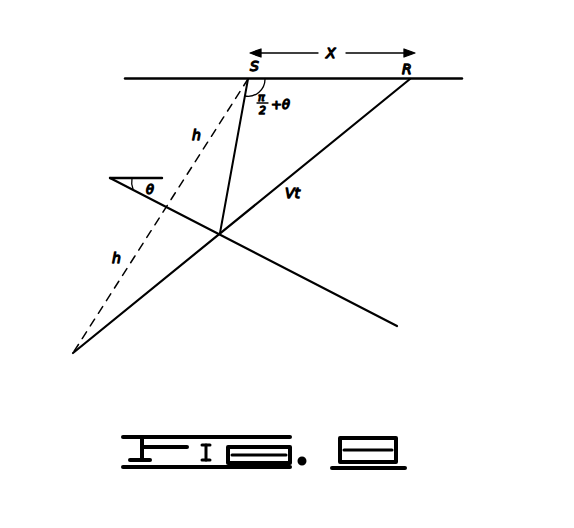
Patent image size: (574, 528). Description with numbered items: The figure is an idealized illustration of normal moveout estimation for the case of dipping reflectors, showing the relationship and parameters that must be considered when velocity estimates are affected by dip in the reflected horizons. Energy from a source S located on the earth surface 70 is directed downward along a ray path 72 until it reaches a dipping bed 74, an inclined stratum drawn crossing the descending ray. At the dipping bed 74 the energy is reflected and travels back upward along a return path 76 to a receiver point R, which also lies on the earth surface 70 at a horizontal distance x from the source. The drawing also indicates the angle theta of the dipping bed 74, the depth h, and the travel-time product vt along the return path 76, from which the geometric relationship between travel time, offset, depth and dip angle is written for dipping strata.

The earth surface 70 is at (439, 78).
The ray path 72 is at (236, 152).
The dipping bed 74 is at (303, 275).
The return path 76 is at (362, 125).